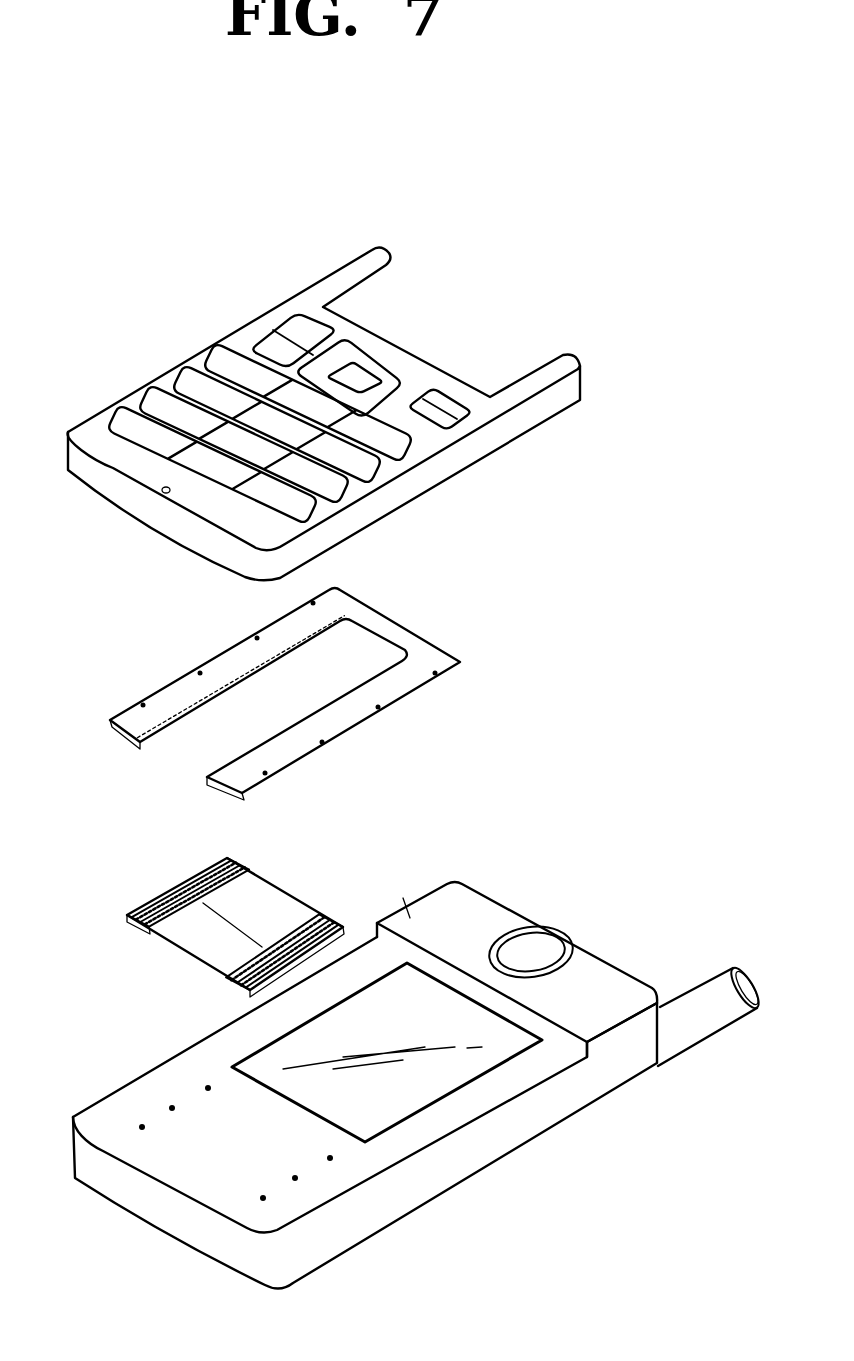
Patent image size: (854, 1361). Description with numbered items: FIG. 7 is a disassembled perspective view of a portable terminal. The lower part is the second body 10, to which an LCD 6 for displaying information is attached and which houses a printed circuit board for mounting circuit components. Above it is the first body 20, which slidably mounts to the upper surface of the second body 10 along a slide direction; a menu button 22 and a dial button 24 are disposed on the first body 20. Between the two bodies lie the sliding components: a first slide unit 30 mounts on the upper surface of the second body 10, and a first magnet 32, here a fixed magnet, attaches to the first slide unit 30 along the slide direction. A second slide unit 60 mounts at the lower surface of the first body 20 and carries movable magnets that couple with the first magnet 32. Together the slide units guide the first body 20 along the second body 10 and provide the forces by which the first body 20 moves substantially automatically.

The LCD 6 is at (410, 1080).
The second body 10 is at (168, 1218).
The first body 20 is at (125, 497).
The menu button 22 is at (270, 347).
The dial button 24 is at (173, 407).
The first slide unit 30 is at (225, 886).
The first magnet 32 is at (310, 913).
The second slide unit 60 is at (420, 657).